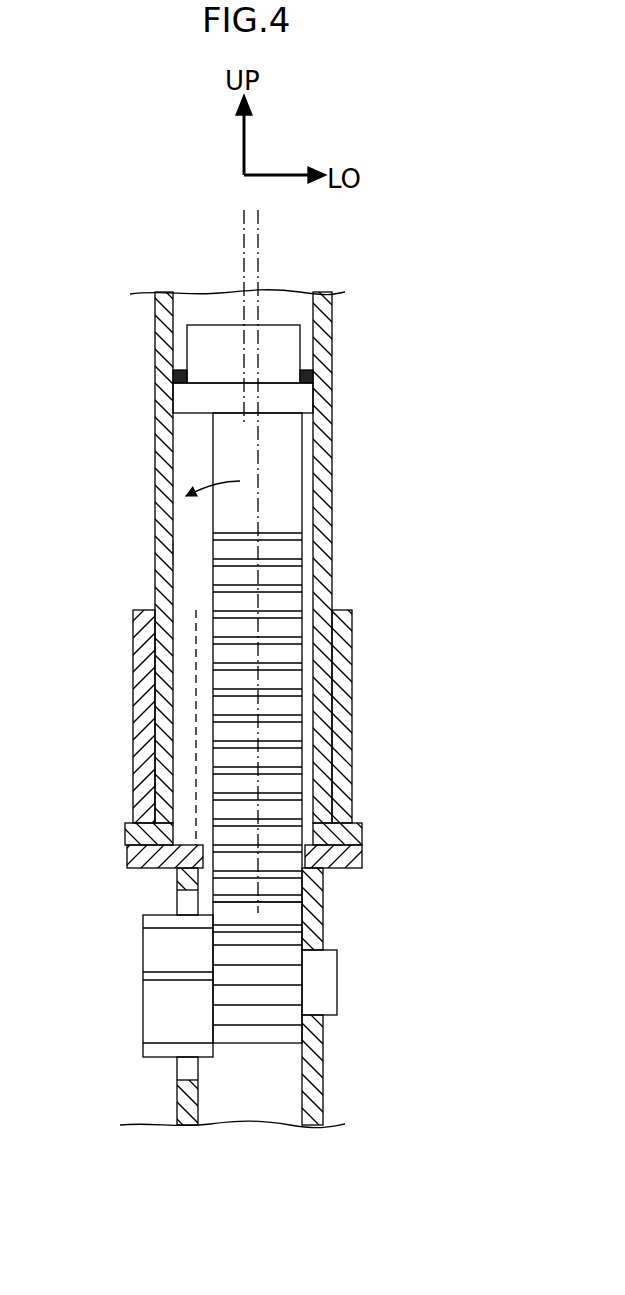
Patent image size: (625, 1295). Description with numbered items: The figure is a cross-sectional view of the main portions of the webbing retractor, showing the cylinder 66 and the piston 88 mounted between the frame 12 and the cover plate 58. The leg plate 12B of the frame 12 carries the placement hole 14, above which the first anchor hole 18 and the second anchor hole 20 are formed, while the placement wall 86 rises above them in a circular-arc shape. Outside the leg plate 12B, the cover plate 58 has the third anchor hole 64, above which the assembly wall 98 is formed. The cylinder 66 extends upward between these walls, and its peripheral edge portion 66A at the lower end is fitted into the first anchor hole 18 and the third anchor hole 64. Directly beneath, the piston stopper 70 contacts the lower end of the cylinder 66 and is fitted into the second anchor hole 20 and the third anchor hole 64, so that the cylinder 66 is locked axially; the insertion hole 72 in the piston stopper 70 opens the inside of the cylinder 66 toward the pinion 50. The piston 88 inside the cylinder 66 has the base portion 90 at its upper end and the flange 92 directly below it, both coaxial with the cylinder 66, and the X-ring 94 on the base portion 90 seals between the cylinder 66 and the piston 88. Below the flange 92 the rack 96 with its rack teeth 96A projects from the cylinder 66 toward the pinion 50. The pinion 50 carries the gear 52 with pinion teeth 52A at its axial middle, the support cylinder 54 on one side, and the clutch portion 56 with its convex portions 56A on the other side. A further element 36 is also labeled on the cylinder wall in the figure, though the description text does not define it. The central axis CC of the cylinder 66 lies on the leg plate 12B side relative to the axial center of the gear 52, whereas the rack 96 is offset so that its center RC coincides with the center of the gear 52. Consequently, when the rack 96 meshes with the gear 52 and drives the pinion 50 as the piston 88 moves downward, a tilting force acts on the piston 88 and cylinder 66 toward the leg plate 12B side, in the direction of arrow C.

The frame 12 is at (204, 1100).
The leg plate 12B is at (177, 1105).
The placement hole 14 is at (177, 1067).
The first anchor hole 18 is at (126, 828).
The second anchor hole 20 is at (162, 860).
The cylinder wall 36 is at (336, 456).
The pinion 50 is at (140, 940).
The gear 52 is at (290, 909).
The pinion teeth 52A is at (262, 1030).
The support cylinder 54 is at (326, 1017).
The clutch portion 56 is at (158, 1063).
The convex portions 56A is at (152, 995).
The cover plate 58 is at (328, 1100).
The third anchor hole 64 is at (362, 846).
The cylinder 66 is at (155, 448).
The peripheral edge portion 66A is at (125, 836).
The piston stopper 70 is at (362, 853).
The insertion hole 72 is at (323, 880).
The placement wall 86 is at (133, 703).
The piston 88 is at (206, 553).
The base portion 90 is at (300, 336).
The flange 92 is at (313, 402).
The X-ring 94 is at (305, 378).
The rack 96 is at (302, 503).
The rack teeth 96A is at (290, 578).
The assembly wall 98 is at (352, 722).
The arrow C is at (208, 481).
The central axis of the cylinder CC is at (244, 235).
The center of the rack RC is at (258, 235).